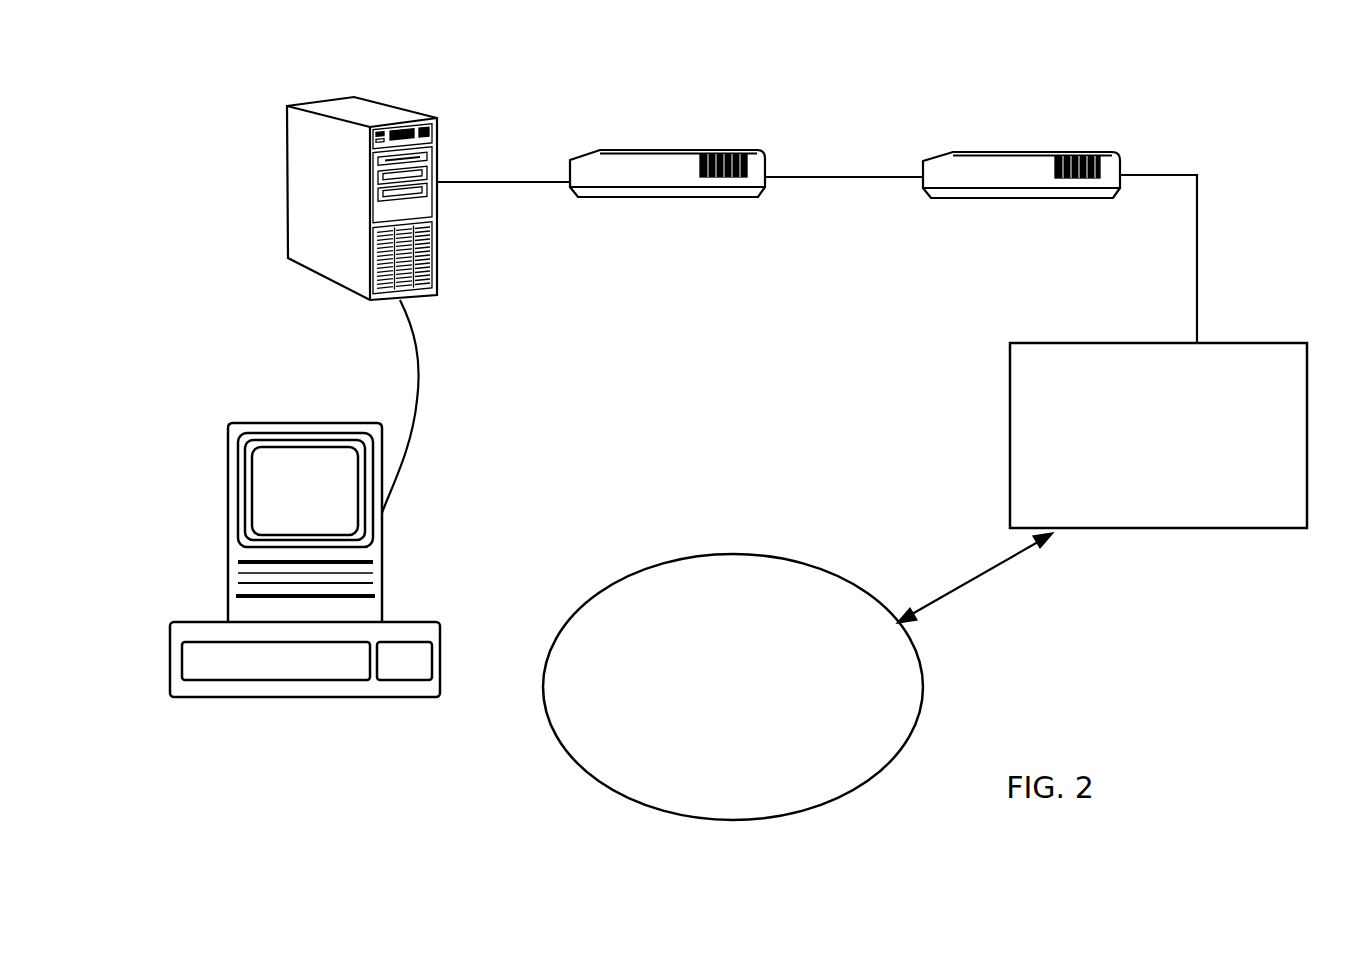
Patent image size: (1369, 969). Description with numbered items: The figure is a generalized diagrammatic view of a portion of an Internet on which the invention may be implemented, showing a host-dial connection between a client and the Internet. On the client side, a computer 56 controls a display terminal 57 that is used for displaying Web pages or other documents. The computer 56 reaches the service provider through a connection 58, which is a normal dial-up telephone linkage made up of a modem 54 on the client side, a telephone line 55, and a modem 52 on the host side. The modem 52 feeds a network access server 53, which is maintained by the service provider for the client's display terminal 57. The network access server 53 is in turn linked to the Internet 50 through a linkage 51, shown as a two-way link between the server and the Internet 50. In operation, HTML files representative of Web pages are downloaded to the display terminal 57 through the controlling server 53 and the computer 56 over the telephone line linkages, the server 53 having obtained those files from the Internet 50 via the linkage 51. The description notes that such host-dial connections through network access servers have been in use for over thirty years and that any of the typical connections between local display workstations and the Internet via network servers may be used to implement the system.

The Internet 50 is at (818, 778).
The linkage 51 is at (972, 580).
The modem 52 is at (987, 155).
The network access server 53 is at (1258, 417).
The modem 54 is at (642, 153).
The telephone line 55 is at (843, 175).
The computer 56 is at (330, 153).
The display terminal 57 is at (235, 488).
The connection 58 is at (480, 180).